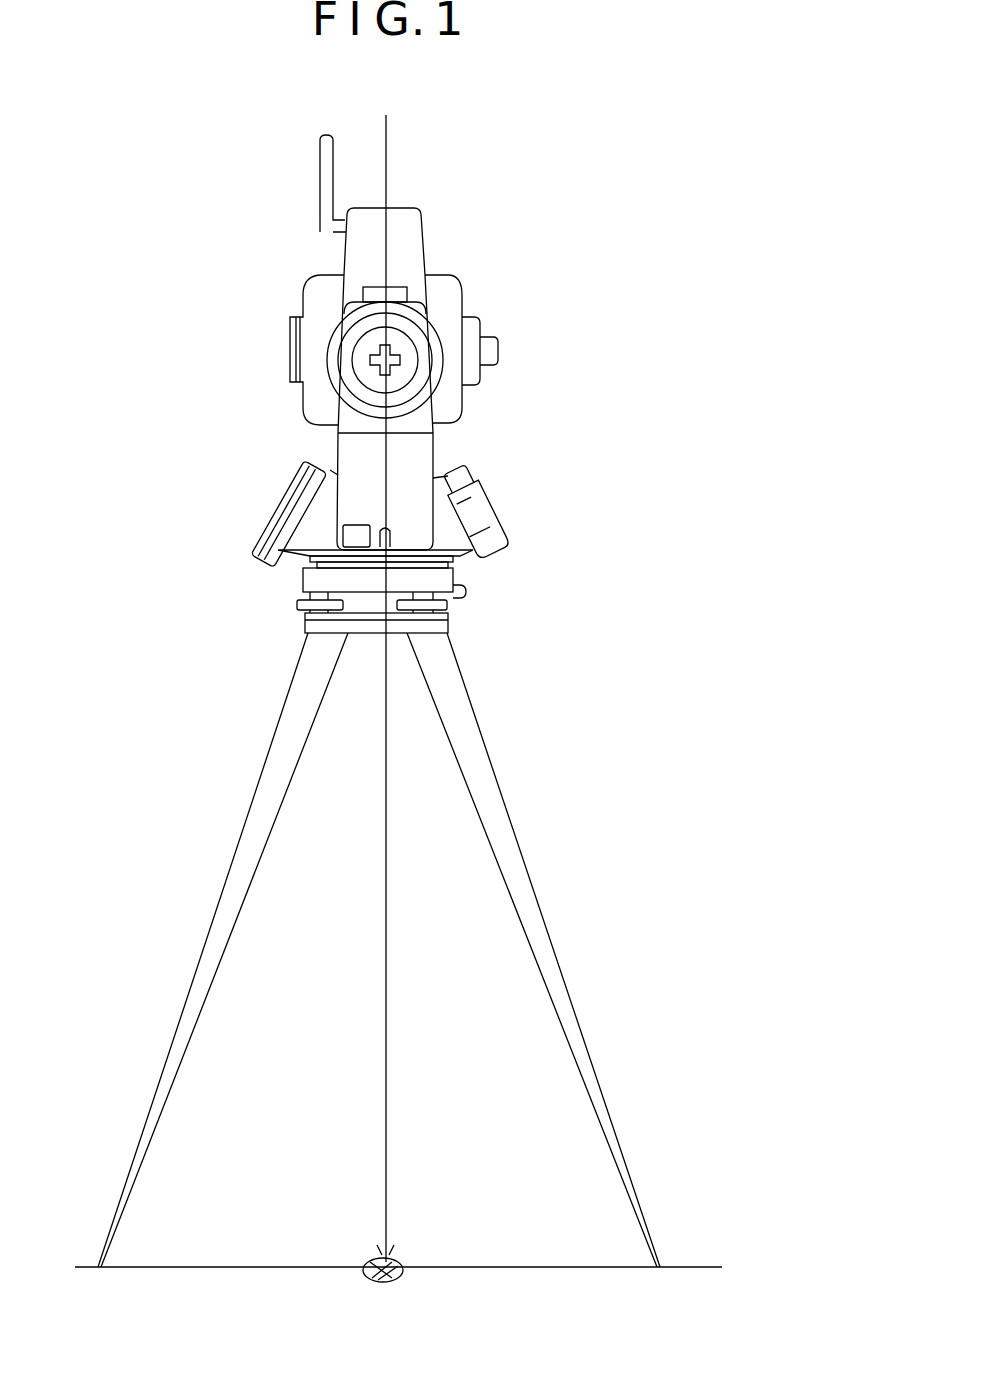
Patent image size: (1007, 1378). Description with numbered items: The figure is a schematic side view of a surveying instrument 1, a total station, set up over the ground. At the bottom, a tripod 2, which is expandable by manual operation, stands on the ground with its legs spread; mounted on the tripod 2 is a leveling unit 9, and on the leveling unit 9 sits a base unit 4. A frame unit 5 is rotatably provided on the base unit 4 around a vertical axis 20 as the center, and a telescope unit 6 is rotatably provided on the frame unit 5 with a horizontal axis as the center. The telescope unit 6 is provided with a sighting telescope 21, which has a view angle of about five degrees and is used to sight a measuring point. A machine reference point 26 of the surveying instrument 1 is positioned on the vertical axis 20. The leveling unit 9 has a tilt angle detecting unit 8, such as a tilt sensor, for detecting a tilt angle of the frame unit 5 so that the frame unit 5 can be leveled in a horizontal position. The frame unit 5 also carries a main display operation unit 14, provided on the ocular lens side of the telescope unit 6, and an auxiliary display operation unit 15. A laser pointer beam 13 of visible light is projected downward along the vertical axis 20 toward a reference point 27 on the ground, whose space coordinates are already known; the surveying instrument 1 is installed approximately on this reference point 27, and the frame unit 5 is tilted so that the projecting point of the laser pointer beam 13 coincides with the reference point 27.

The surveying instrument 1 is at (96, 224).
The tripod 2 is at (492, 763).
The base unit 4 is at (302, 580).
The frame unit 5 is at (420, 220).
The telescope unit 6 is at (460, 277).
The tilt angle detecting unit 8 is at (358, 524).
The leveling unit 9 is at (298, 605).
The laser pointer beam 13 is at (386, 995).
The main display operation unit 14 is at (486, 486).
The auxiliary display operation unit 15 is at (277, 517).
The vertical axis 20 is at (386, 162).
The sighting telescope 21 is at (498, 320).
The machine reference point 26 is at (374, 352).
The reference point 27 is at (407, 1258).